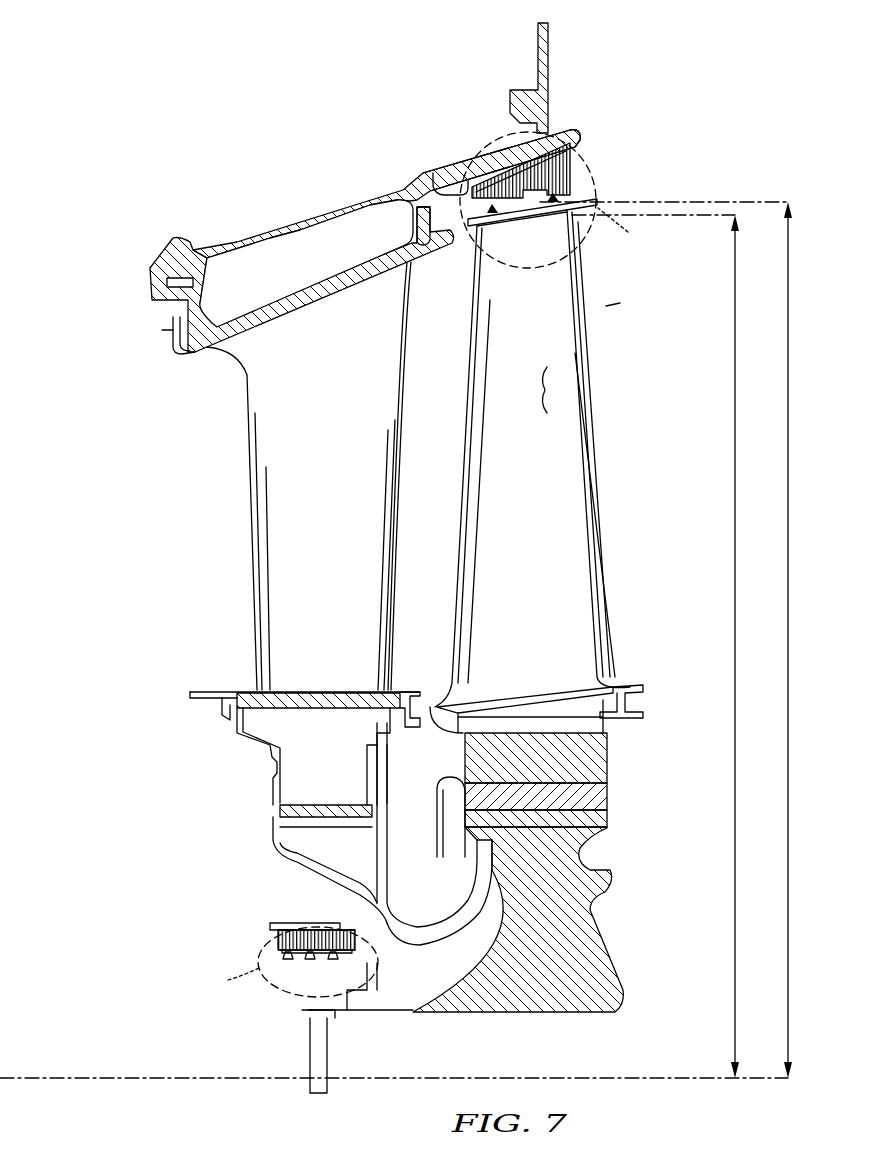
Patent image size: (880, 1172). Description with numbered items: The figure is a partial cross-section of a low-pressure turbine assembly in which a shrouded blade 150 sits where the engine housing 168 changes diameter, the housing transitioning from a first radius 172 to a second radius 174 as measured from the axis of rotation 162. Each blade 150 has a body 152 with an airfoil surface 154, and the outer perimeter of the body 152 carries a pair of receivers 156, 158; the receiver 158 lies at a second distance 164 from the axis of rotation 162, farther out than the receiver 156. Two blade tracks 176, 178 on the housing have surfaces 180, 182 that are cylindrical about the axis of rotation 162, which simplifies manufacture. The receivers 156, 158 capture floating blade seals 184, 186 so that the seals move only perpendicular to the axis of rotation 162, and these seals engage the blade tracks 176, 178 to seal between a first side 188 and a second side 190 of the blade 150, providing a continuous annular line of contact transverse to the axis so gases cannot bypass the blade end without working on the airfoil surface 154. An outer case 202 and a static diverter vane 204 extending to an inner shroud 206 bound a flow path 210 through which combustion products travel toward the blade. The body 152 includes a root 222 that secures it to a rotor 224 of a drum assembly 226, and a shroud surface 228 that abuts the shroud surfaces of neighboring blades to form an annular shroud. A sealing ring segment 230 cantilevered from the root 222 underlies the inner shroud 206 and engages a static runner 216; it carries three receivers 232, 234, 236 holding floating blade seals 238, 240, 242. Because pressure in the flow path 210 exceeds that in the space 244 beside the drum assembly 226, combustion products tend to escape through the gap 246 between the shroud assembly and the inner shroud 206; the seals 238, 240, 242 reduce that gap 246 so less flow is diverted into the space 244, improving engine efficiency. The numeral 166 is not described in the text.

The blade 150 is at (568, 471).
The body 152 is at (597, 578).
The airfoil surface 154 is at (547, 390).
The receiver 156 is at (585, 180).
The receiver 158 is at (484, 232).
The axis of rotation 162 is at (45, 1076).
The second distance 164 is at (788, 410).
The radial dimension to blade tip 166 is at (735, 462).
The engine housing 168 is at (370, 195).
The first radius 172 is at (413, 176).
The second radius 174 is at (493, 122).
The blade track 176 is at (580, 150).
The blade track 178 is at (470, 190).
The surface 180 is at (553, 192).
The surface 182 is at (510, 182).
The floating blade seal 184 is at (565, 153).
The floating blade seal 186 is at (424, 205).
The first side 188 is at (432, 393).
The second side 190 is at (606, 306).
The outer case 202 is at (263, 230).
The static diverter vane 204 is at (298, 476).
The inner shroud 206 is at (247, 682).
The flow path 210 is at (425, 524).
The runner 216 is at (307, 928).
The root 222 is at (573, 763).
The rotor 224 is at (575, 960).
The drum assembly 226 is at (565, 870).
The shroud surface 228 is at (573, 690).
The sealing ring segment 230 is at (254, 955).
The receiver 232 is at (290, 962).
The receiver 234 is at (311, 962).
The receiver 236 is at (334, 962).
The floating blade seal 238 is at (283, 928).
The floating blade seal 240 is at (330, 928).
The floating blade seal 242 is at (350, 928).
The space 244 is at (245, 935).
The gap 246 is at (424, 870).